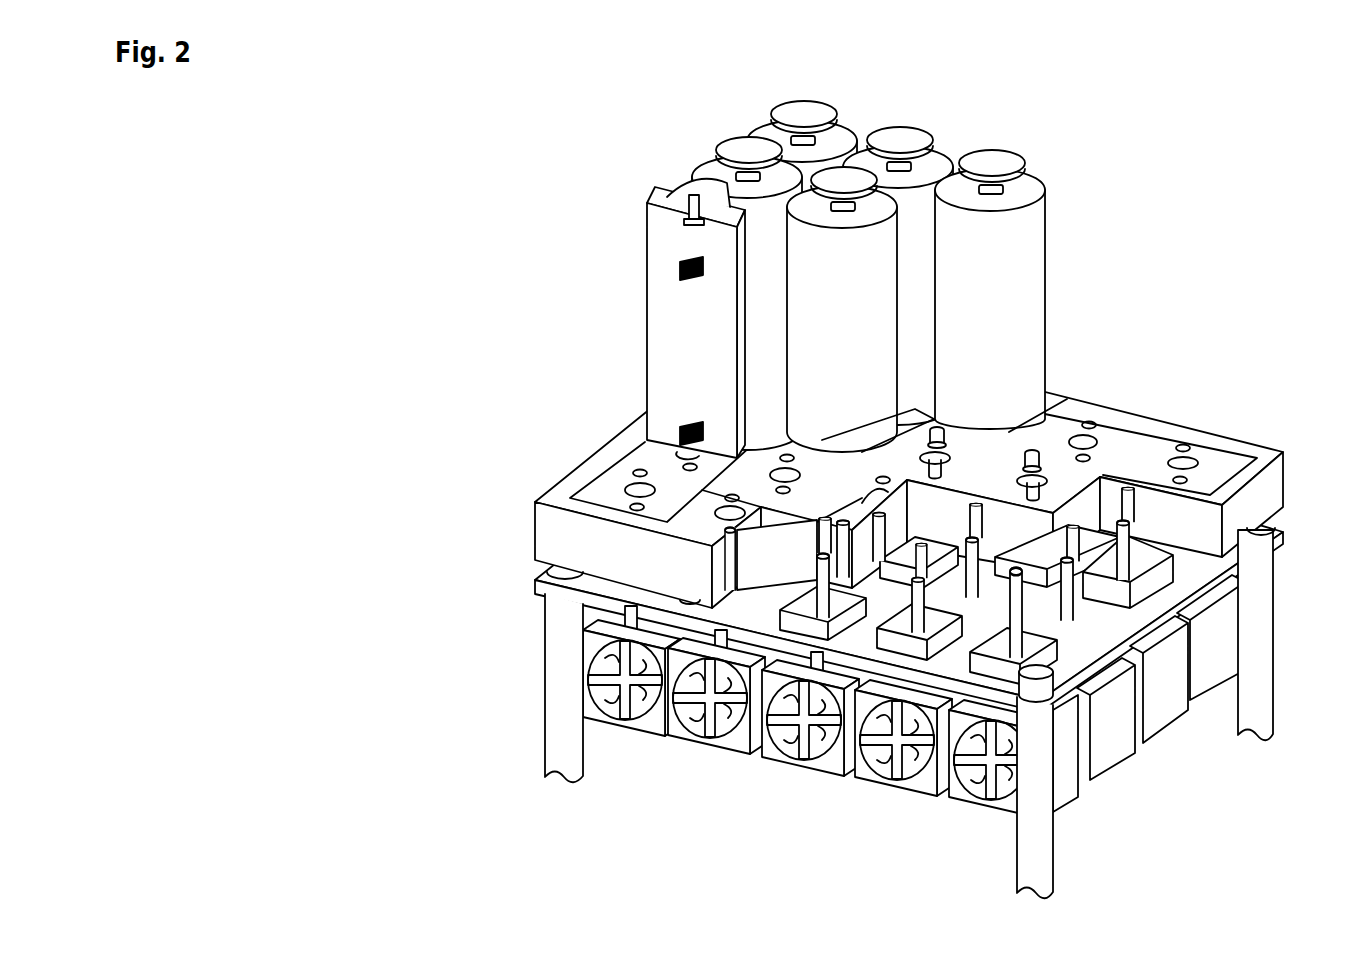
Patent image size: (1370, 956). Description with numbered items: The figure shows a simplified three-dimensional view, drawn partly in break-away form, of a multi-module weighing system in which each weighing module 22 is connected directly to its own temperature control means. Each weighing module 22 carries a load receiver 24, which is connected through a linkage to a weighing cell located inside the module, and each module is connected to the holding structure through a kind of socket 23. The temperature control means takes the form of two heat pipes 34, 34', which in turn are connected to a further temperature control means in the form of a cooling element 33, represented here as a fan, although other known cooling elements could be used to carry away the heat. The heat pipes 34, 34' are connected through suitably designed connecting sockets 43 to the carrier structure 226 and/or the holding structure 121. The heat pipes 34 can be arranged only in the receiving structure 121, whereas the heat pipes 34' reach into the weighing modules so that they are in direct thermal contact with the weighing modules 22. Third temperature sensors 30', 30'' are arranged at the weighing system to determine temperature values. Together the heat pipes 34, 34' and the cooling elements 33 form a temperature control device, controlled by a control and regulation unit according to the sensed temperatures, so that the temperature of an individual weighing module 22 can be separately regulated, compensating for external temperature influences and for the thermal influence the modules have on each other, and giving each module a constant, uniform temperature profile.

The weighing module 22 is at (868, 276).
The load receiver 24 is at (987, 163).
The socket 23 is at (1035, 432).
The third temperature sensor 30' is at (578, 418).
The third temperature sensor 30'' is at (578, 245).
The heat pipe 34 is at (1042, 510).
The heat pipe 34' is at (1142, 382).
The holding structure 121 is at (1260, 503).
The carrier structure 226 is at (1190, 580).
The connecting socket 43 is at (1150, 585).
The cooling element 33 is at (1172, 695).